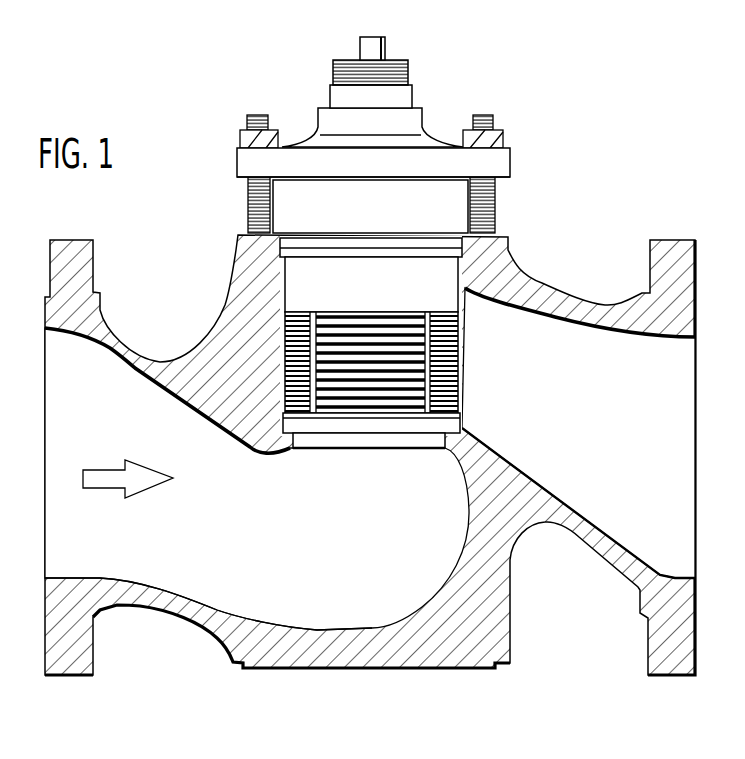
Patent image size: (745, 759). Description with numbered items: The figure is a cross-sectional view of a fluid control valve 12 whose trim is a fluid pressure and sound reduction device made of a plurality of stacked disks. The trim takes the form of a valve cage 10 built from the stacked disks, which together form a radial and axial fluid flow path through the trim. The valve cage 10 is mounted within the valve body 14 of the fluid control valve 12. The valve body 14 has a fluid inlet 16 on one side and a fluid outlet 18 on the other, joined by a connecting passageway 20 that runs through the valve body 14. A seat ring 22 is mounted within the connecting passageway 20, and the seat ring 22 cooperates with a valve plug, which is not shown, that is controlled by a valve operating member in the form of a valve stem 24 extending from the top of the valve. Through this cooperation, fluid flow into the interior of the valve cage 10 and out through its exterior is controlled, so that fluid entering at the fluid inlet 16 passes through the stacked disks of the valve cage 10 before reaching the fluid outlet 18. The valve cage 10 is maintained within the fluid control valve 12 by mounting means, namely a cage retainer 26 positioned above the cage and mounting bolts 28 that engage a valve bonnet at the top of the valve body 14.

The valve cage 10 is at (455, 352).
The fluid control valve 12 is at (583, 202).
The valve body 14 is at (110, 334).
The fluid inlet 16 is at (72, 457).
The fluid outlet 18 is at (692, 430).
The connecting passageway 20 is at (368, 548).
The seat ring 22 is at (330, 422).
The valve stem 24 is at (386, 42).
The cage retainer 26 is at (378, 296).
The mounting bolts 28 is at (253, 117).